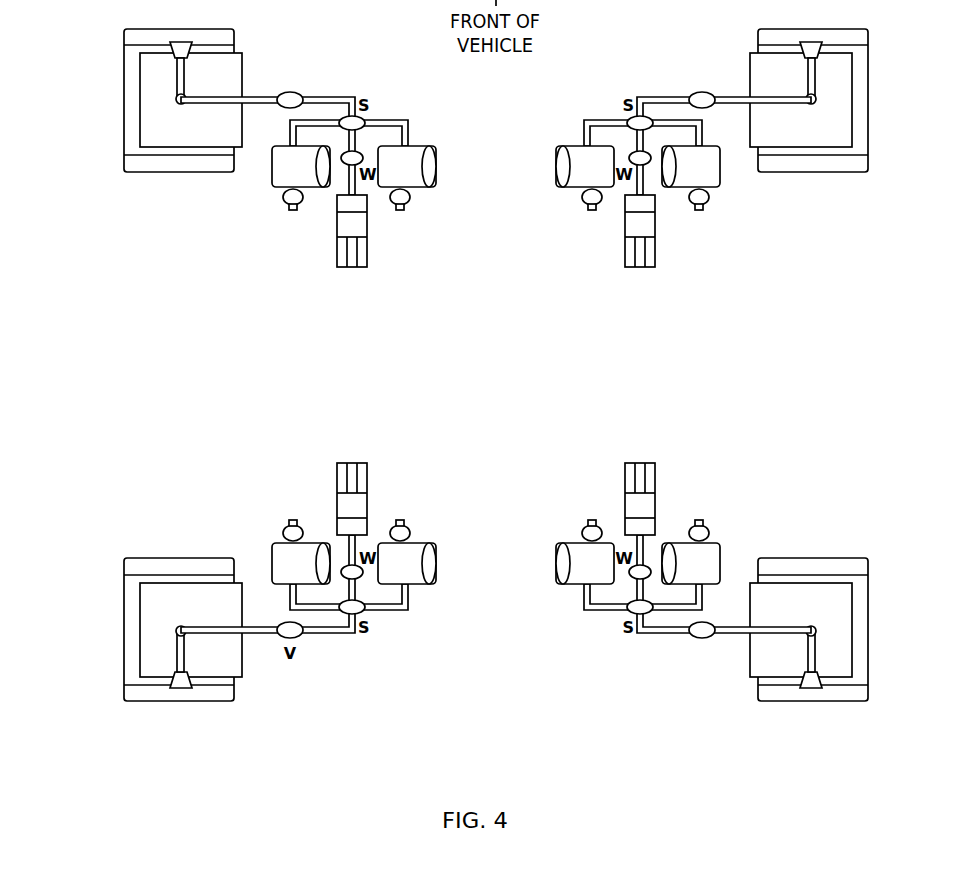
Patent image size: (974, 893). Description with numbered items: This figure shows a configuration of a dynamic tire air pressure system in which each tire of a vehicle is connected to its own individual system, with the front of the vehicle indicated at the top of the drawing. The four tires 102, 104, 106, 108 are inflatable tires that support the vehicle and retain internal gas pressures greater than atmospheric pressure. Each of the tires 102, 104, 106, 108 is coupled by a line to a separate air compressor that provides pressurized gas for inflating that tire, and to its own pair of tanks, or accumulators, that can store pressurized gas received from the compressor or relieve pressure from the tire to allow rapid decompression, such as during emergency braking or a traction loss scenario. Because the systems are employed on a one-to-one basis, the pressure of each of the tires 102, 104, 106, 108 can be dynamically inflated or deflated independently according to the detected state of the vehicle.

The tire 102 is at (124, 96).
The tire 104 is at (868, 96).
The tire 106 is at (124, 637).
The tire 108 is at (868, 637).